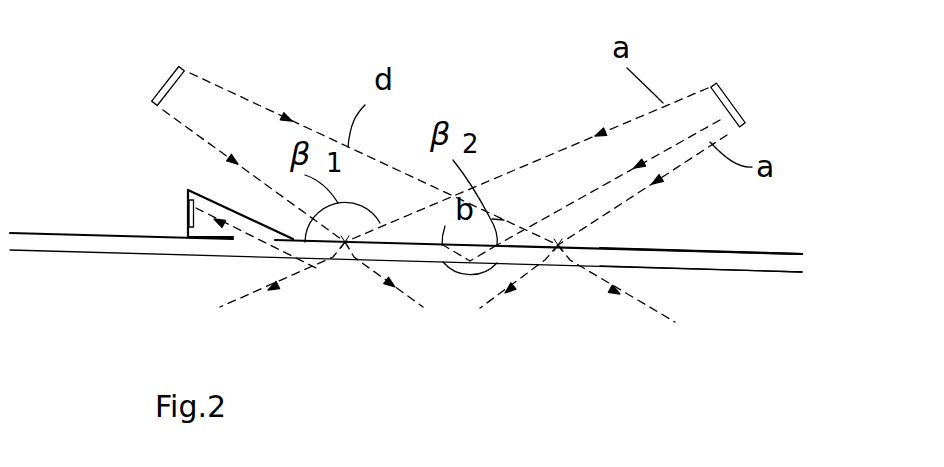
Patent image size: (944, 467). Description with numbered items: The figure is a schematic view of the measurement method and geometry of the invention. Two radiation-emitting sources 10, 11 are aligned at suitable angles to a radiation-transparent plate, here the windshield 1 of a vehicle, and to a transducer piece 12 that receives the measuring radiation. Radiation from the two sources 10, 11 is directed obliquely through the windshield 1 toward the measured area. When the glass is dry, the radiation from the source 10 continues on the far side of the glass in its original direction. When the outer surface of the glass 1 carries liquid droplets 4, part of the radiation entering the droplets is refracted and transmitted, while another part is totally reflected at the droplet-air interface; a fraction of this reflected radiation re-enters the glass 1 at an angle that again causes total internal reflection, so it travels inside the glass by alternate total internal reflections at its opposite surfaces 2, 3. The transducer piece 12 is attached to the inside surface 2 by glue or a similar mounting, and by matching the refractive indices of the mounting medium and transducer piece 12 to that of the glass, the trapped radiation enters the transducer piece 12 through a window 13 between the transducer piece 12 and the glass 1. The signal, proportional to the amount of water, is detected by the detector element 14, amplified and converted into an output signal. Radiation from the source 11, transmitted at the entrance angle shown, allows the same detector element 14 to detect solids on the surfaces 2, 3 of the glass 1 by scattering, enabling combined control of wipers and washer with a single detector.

The windshield 1 is at (115, 242).
The inside surface 2 is at (693, 250).
The opposite surface 3 is at (732, 272).
The liquid droplets 4 is at (457, 277).
The radiation source 10 is at (728, 98).
The radiation source 11 is at (160, 82).
The transducer piece 12 is at (172, 188).
The window 13 is at (260, 237).
The detector element 14 is at (188, 215).